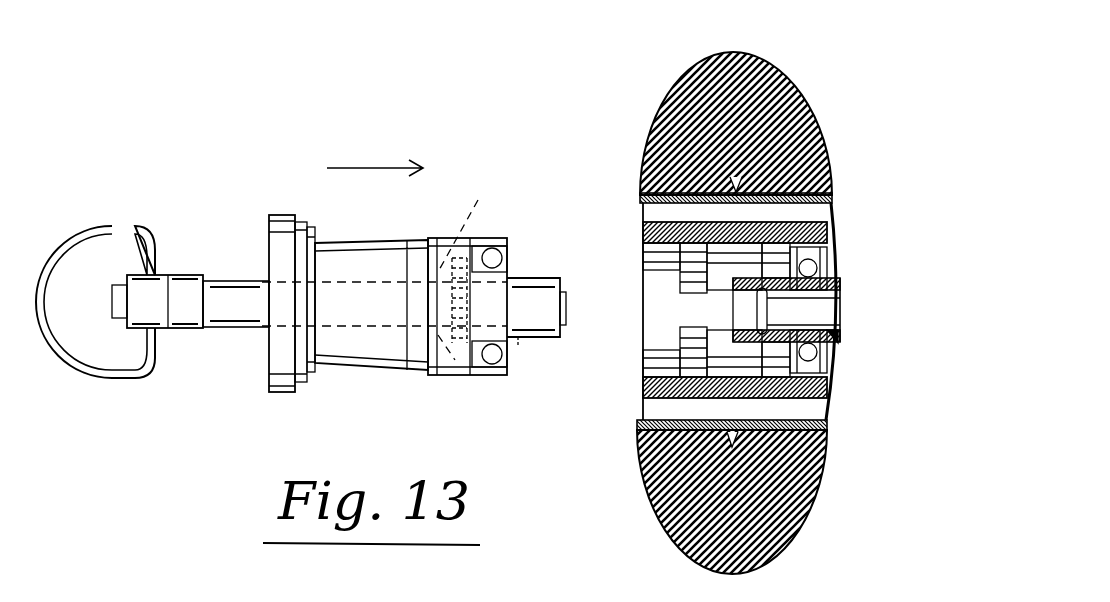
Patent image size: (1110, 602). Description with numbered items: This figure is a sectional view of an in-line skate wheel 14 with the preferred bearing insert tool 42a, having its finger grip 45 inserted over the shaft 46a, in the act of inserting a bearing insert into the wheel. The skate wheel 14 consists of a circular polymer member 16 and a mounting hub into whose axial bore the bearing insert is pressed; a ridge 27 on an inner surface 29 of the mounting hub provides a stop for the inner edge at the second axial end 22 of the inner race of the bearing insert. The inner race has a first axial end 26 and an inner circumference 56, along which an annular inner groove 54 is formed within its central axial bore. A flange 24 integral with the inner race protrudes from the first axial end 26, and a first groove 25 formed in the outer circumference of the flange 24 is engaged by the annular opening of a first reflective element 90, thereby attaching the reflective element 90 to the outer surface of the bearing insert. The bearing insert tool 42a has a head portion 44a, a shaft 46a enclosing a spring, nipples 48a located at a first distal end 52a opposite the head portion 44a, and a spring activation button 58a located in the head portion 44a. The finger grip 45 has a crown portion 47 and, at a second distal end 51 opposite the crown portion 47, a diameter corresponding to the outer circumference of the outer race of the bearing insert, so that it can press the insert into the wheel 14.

The in-line skate wheel 14 is at (795, 66).
The circular polymer member 16 is at (826, 167).
The second axial end 22 is at (558, 331).
The flange 24 is at (840, 288).
The first groove 25 is at (882, 402).
The first axial end 26 is at (840, 343).
The ridge 27 is at (692, 295).
The inner surface 29 is at (657, 295).
The bearing insert tool 42a is at (190, 232).
The head portion 44a is at (133, 272).
The finger grip 45 is at (380, 365).
The shaft 46a is at (212, 328).
The crown portion 47 is at (288, 214).
The nipples 48a is at (525, 343).
The second distal end 51 is at (448, 238).
The first distal end 52a is at (568, 302).
The annular inner groove 54 is at (842, 307).
The inner circumference 56 is at (838, 302).
The spring activation button 58a is at (115, 313).
The first reflective element 90 is at (825, 407).